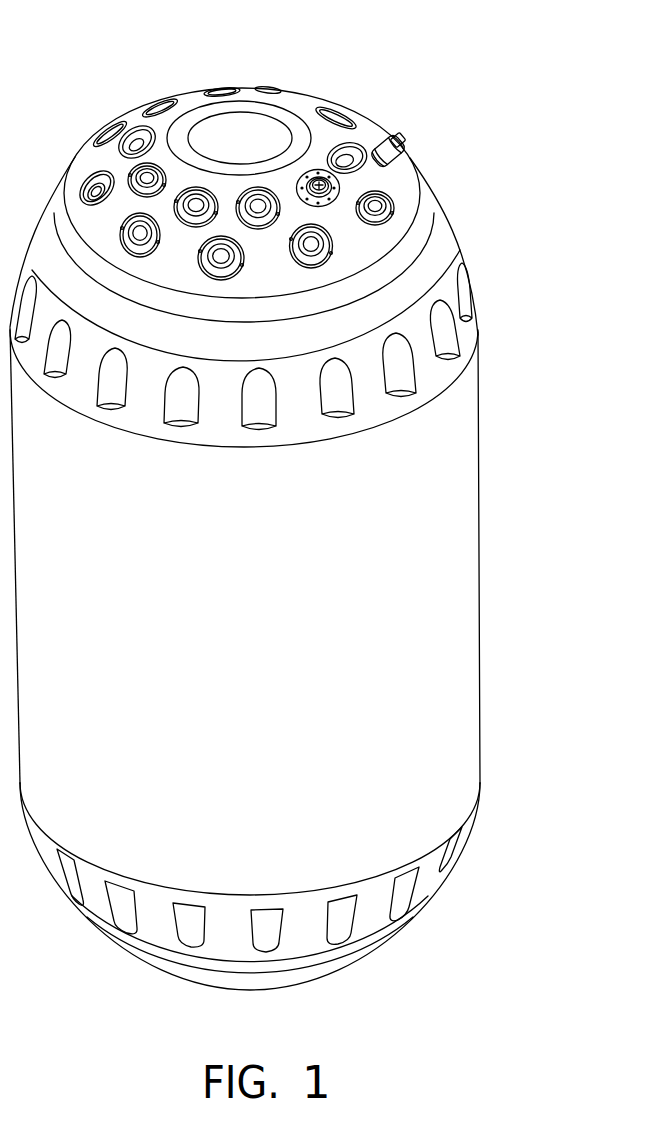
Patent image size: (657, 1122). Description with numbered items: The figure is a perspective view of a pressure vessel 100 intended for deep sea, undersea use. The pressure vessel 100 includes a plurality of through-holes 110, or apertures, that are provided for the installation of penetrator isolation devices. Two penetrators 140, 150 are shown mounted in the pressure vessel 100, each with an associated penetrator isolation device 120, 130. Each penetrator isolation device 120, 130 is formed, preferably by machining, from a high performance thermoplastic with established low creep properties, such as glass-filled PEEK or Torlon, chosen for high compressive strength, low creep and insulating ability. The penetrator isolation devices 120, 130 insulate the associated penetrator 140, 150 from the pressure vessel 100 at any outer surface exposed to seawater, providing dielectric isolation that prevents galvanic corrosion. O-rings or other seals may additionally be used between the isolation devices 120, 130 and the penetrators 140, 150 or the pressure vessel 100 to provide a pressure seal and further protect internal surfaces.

The pressure vessel 100 is at (301, 501).
The through-holes 110 is at (106, 179).
The penetrator isolation device 120 is at (365, 109).
The penetrator isolation device 130 is at (445, 123).
The penetrator 140 is at (323, 175).
The penetrator 150 is at (403, 136).